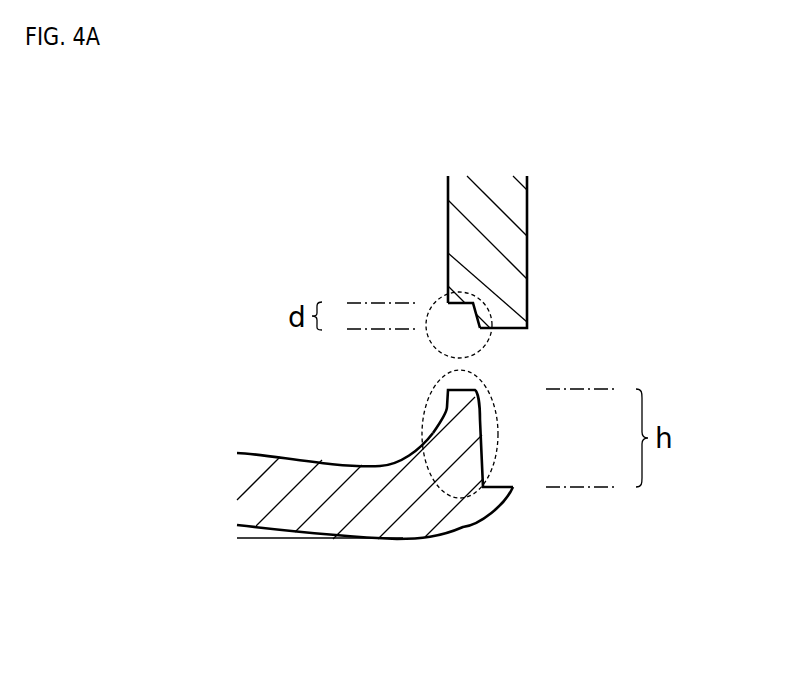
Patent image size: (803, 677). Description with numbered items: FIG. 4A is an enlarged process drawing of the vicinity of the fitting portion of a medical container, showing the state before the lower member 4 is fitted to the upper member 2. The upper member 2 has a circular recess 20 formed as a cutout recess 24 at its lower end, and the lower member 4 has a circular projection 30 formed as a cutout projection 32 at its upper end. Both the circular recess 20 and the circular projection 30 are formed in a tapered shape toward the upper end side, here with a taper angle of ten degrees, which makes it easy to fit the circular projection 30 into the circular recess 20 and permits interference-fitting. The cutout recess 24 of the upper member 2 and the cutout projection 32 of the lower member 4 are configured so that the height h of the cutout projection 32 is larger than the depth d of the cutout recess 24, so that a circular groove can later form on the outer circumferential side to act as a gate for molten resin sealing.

The upper member 2 is at (555, 264).
The circular recess 20 is at (473, 342).
The cutout recess 24 is at (555, 327).
The circular projection 30 is at (443, 402).
The cutout projection 32 is at (473, 438).
The lower member 4 is at (375, 508).